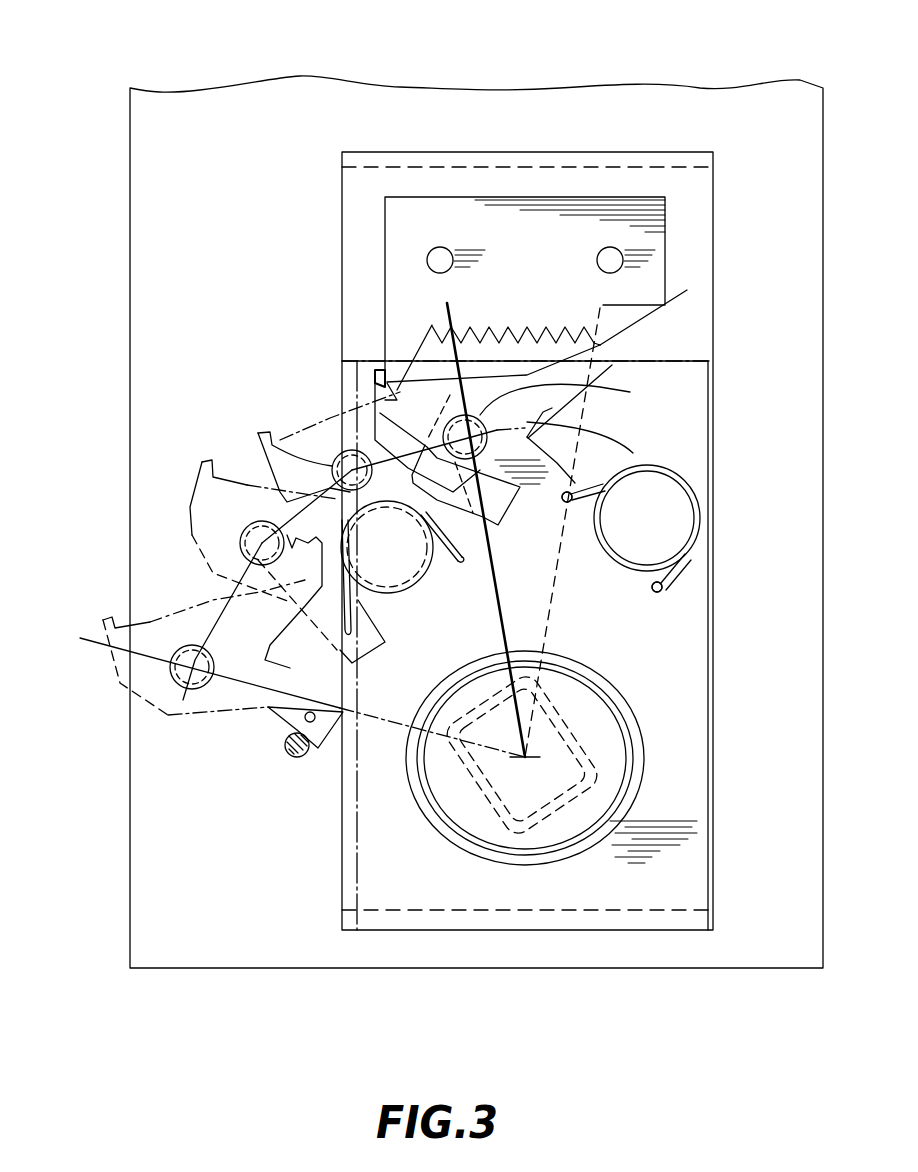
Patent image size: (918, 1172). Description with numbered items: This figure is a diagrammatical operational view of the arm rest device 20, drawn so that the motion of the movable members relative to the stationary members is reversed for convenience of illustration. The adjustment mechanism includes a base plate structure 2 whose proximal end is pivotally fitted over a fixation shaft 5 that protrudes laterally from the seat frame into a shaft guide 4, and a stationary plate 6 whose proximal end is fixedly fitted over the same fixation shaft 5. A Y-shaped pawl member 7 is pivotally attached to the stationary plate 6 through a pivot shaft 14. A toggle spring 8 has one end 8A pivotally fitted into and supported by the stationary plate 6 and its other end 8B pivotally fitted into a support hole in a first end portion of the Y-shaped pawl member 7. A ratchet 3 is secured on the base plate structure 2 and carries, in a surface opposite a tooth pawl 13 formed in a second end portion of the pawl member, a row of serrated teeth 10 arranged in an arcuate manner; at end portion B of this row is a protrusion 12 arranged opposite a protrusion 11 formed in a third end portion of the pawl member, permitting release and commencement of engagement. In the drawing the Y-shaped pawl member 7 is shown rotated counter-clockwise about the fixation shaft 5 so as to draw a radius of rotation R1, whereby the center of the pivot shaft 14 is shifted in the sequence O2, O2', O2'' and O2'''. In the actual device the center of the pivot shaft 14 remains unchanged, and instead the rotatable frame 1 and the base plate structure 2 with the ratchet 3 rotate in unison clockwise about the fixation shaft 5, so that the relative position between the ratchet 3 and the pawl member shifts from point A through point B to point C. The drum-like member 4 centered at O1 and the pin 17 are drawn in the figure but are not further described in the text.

The rotatable frame 1 is at (790, 413).
The arm rest device 20 is at (468, 86).
The base plate structure 2 is at (700, 238).
The ratchet 3 is at (555, 225).
The shaft guide 4 is at (612, 690).
The fixation shaft 5 is at (570, 760).
The stationary plate 6 is at (690, 455).
The Y-shaped pawl member 7 is at (538, 411).
The toggle spring 8 is at (698, 540).
The one end of toggle spring 8A is at (670, 582).
The other end of toggle spring 8B is at (567, 502).
The serrated teeth 10 is at (540, 325).
The protrusion of pawl member 11 is at (375, 375).
The protrusion of ratchet 12 is at (384, 376).
The tooth pawl 13 is at (602, 357).
The pivot shaft 14 is at (582, 388).
The pin 17 is at (290, 754).
The point A is at (608, 513).
The end portion B / point B is at (452, 318).
The point C is at (82, 637).
The drum center O1 is at (520, 762).
The center of pivot shaft O2 is at (389, 439).
The shifted center of pivot shaft O2' is at (305, 467).
The shifted center of pivot shaft O2'' is at (184, 580).
The shifted center of pivot shaft O2''' is at (204, 636).
The radius of rotation R1 is at (183, 730).